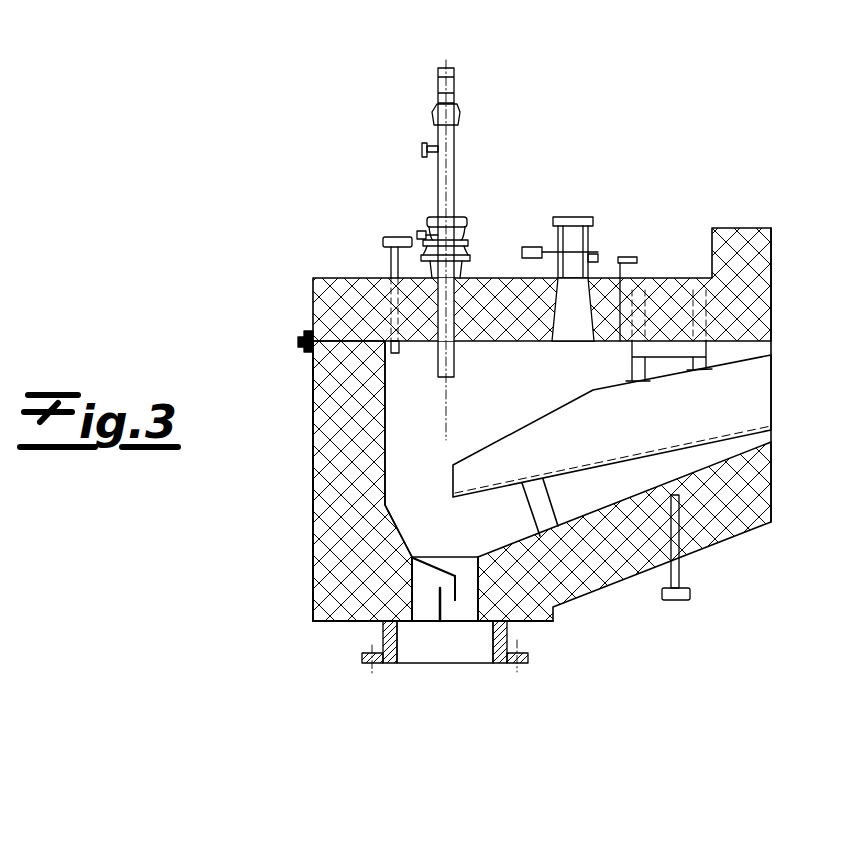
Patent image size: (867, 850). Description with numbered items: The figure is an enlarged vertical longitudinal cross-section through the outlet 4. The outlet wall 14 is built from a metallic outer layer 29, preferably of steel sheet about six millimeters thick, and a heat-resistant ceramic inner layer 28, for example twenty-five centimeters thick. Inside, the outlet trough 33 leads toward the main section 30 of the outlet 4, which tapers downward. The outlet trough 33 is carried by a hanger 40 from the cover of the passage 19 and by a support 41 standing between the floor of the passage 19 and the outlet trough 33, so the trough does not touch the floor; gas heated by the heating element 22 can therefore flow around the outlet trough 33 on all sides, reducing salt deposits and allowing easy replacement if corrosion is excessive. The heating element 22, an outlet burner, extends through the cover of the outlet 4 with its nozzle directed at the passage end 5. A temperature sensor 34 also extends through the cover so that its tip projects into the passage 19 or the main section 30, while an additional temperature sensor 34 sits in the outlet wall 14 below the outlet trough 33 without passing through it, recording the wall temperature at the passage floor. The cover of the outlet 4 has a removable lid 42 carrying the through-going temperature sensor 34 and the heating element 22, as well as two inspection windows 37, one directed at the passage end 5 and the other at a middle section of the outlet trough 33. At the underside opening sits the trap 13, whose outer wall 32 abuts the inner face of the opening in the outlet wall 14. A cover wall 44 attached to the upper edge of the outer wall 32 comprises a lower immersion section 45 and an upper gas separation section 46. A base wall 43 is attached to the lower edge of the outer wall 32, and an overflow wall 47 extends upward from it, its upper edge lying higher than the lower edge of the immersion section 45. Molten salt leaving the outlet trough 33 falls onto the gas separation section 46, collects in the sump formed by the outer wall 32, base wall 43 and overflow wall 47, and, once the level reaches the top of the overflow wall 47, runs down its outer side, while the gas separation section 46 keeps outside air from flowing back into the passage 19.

The outlet 4 is at (325, 131).
The passage end 5 is at (430, 660).
The trap 13 is at (421, 553).
The outlet wall 14 is at (308, 285).
The passage 19 is at (502, 360).
The heating element 22 is at (448, 162).
The inner layer 28 is at (330, 423).
The outer layer 29 is at (313, 388).
The main section 30 is at (423, 452).
The outer wall 32 is at (398, 622).
The outlet trough 33 is at (596, 450).
The temperature sensor 34 is at (383, 225).
The inspection window 37 is at (428, 216).
The hanger 40 is at (667, 352).
The support 41 is at (546, 532).
The lid 42 is at (481, 297).
The base wall 43 is at (443, 606).
The cover wall 44 is at (483, 594).
The immersion section 45 is at (460, 600).
The gas separation section 46 is at (432, 571).
The overflow wall 47 is at (439, 607).